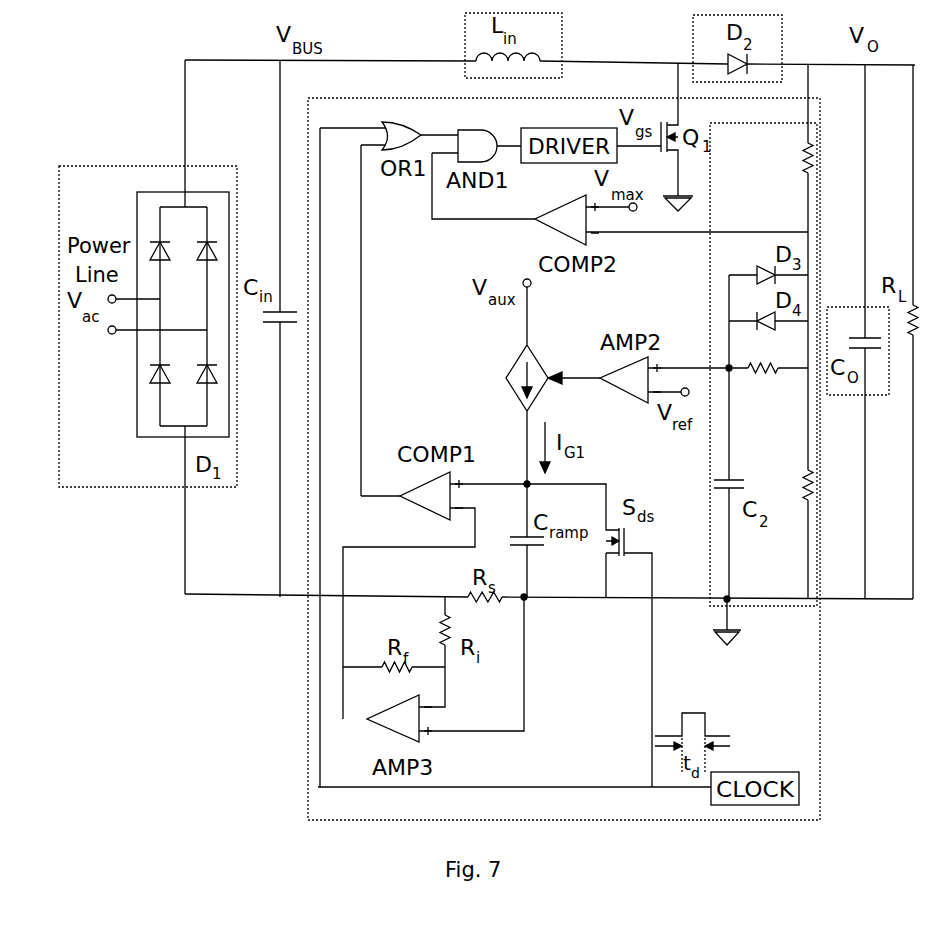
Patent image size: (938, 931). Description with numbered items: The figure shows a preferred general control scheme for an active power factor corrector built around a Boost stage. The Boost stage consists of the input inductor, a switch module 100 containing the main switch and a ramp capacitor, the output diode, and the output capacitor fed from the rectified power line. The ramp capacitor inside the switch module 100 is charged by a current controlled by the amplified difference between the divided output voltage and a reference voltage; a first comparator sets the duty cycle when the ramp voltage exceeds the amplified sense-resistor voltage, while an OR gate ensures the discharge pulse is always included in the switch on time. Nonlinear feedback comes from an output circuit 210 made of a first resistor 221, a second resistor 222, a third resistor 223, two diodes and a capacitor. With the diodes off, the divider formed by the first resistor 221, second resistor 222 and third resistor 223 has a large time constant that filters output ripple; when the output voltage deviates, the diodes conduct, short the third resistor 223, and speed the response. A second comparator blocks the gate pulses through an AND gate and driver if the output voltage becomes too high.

The switch module 100 is at (308, 473).
The output circuit 210 is at (752, 607).
The resistor R1 221 is at (805, 171).
The resistor R2 222 is at (803, 501).
The resistor R3 223 is at (780, 374).